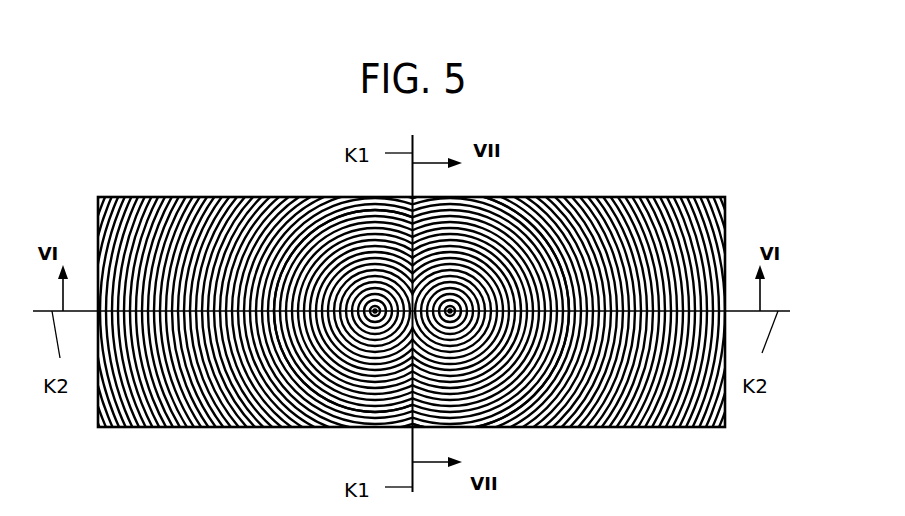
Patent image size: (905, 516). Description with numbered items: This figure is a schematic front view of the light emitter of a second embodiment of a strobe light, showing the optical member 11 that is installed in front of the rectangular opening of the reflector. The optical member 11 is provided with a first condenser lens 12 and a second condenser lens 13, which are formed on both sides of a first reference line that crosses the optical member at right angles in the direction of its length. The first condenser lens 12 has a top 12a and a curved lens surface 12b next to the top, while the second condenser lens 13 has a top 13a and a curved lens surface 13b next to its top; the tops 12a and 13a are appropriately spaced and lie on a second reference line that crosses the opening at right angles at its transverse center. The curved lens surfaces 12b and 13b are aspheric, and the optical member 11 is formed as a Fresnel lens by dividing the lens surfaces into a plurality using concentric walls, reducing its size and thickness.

The optical member 11 is at (570, 197).
The first condenser lens 12 is at (168, 368).
The top of first condenser lens 12a is at (375, 311).
The curved lens surface of first condenser lens 12b is at (283, 352).
The second condenser lens 13 is at (680, 375).
The top of second condenser lens 13a is at (450, 311).
The curved lens surface of second condenser lens 13b is at (560, 352).